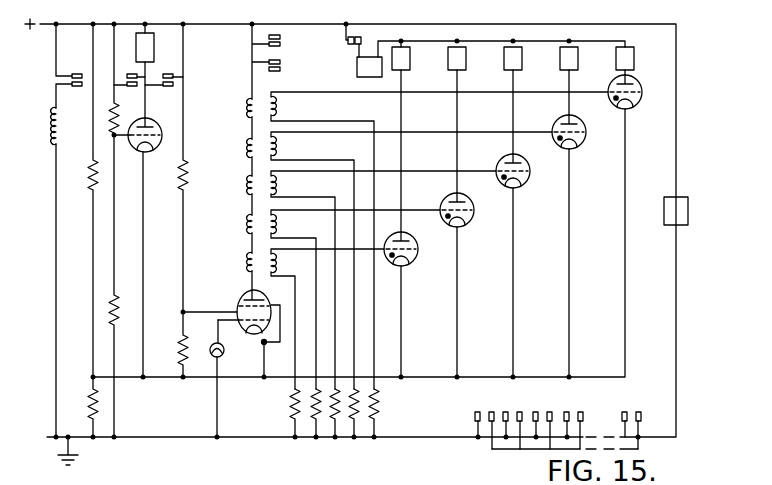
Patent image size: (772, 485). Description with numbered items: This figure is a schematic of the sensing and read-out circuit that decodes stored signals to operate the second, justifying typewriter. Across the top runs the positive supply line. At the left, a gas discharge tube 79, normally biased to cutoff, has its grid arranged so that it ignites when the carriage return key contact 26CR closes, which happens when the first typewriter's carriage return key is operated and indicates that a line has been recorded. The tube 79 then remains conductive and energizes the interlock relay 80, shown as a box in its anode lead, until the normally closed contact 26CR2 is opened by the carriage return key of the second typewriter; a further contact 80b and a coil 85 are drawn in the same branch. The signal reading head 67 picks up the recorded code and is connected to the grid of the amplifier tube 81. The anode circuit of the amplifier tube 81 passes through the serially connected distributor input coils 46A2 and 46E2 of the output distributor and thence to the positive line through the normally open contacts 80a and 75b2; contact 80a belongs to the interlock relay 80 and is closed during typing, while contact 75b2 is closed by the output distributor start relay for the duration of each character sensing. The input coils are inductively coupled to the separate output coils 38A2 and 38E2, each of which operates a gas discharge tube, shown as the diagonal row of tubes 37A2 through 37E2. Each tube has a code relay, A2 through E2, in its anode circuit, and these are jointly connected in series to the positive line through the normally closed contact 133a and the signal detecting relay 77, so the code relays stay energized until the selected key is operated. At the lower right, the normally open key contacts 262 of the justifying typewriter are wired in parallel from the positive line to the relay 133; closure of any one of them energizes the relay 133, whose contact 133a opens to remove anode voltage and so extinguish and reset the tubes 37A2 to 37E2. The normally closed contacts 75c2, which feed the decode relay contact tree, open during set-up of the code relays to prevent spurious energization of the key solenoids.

The contact of interlock relay 80 80b is at (73, 80).
The carriage return key contact 26CR is at (126, 84).
The interlock relay 80 is at (157, 55).
The normally closed contact 26CR2 is at (174, 86).
The gas discharge tube 79 is at (156, 124).
The coil 85 is at (70, 133).
The distributor input coil 46E2 is at (250, 104).
The distributor input coil 46A2 is at (247, 262).
The normally open contact of interlock relay 80a is at (270, 33).
The normally open contact of output distributor start relay 75b2 is at (282, 63).
The normally closed contact of relay 133 133a is at (346, 44).
The signal detecting relay 77 is at (357, 67).
The code relay A2 is at (412, 63).
The code relay E2 is at (646, 62).
The output coil 38E2 is at (287, 118).
The output coil 38A2 is at (327, 319).
The gas discharge tube 37A2 is at (418, 266).
The gas discharge tube 37E2 is at (640, 102).
The amplifier tube 81 is at (243, 303).
The signal reading head 67 is at (224, 350).
The relay 133 is at (665, 218).
The normally open key contacts 262 is at (474, 420).
The normally closed contacts 75c2 is at (534, 467).